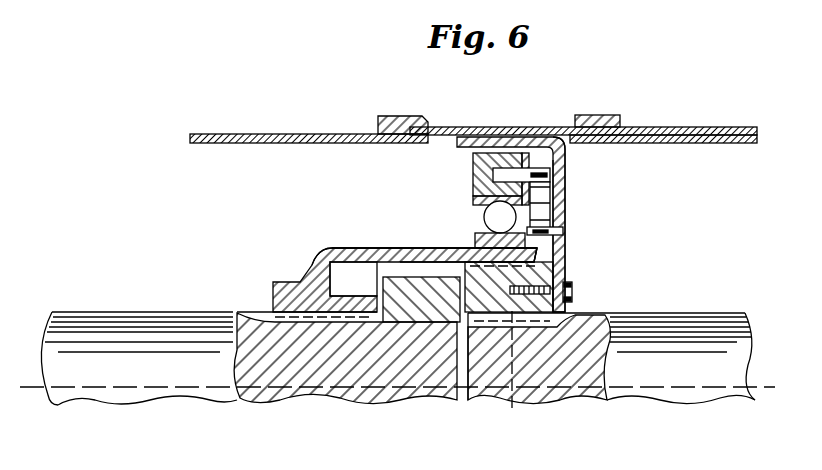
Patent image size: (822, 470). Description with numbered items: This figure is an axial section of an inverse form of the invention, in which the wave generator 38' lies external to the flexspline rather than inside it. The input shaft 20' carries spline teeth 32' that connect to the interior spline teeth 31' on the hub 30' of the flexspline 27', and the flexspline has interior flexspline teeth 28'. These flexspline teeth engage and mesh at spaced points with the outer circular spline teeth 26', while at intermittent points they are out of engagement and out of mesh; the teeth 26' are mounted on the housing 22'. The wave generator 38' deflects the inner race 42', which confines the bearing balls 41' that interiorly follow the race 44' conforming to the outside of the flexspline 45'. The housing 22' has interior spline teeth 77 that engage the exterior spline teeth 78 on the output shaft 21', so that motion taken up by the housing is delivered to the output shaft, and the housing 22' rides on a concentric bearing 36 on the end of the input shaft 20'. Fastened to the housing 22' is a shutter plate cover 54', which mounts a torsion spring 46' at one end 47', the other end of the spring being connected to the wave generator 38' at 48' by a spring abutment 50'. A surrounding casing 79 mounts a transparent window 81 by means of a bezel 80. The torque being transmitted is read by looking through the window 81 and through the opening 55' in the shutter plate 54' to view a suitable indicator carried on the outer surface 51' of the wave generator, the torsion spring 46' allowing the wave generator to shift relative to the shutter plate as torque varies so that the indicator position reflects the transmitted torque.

The input shaft 20' is at (139, 339).
The output shaft 21' is at (681, 342).
The housing 22' is at (568, 286).
The outer circular spline teeth 26' is at (555, 262).
The flexspline 27' is at (424, 230).
The interior flexspline teeth 28' is at (486, 286).
The hub 30' is at (402, 269).
The interior spline teeth 31' is at (353, 290).
The spline teeth 32' is at (291, 289).
The concentric bearing 36 is at (408, 298).
The wave generator 38' is at (489, 137).
The bearing balls 41' is at (464, 210).
The inner race 42' is at (467, 182).
The following race 44' is at (476, 232).
The flexspline 45' is at (434, 243).
The torsion spring 46' is at (567, 206).
The spring end 47' is at (589, 240).
The spring connection point 48' is at (569, 180).
The spring abutment 50' is at (567, 155).
The outer surface 51' is at (537, 151).
The shutter plate cover 54' is at (593, 236).
The opening 55' is at (511, 195).
The interior spline teeth 77 is at (509, 373).
The exterior spline teeth 78 is at (575, 319).
The casing 79 is at (719, 135).
The bezel 80 is at (614, 126).
The transparent window 81 is at (450, 131).